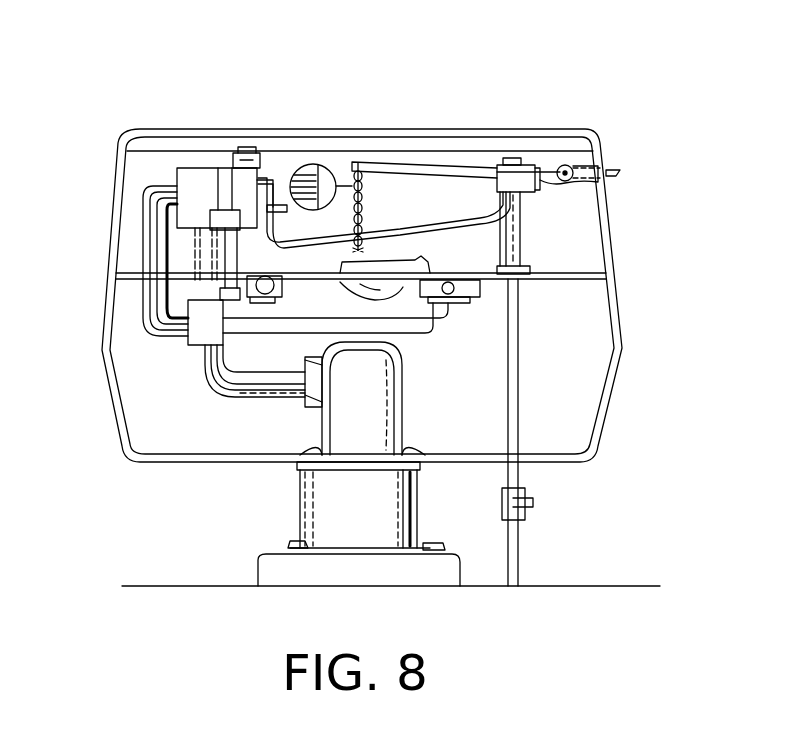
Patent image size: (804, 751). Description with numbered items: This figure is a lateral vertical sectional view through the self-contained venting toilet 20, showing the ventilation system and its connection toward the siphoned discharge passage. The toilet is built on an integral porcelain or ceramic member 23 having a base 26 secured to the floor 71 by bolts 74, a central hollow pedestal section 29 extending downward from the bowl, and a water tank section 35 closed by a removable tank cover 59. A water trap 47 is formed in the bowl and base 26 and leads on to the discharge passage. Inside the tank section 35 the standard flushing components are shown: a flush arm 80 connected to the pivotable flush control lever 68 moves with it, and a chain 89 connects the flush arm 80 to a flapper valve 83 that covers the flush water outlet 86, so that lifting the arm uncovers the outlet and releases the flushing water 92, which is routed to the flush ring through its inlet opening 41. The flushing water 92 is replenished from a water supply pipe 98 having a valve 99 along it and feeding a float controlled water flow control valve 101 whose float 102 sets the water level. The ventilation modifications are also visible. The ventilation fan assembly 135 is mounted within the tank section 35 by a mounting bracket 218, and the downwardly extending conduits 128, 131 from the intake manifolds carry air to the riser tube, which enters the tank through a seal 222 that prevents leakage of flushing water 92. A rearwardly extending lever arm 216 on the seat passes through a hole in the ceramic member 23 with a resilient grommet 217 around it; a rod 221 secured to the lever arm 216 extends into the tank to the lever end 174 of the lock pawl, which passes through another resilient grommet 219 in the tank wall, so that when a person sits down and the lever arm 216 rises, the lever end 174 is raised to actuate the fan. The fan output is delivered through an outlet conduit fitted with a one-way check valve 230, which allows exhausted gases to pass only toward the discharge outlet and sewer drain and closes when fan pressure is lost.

The self-contained venting toilet 20 is at (432, 54).
The integral porcelain or ceramic member 23 is at (632, 346).
The base 26 is at (255, 572).
The central hollow pedestal section 29 is at (300, 497).
The water tank section 35 is at (618, 262).
The inlet opening 41 is at (380, 290).
The water trap 47 is at (402, 411).
The removable tank cover 59 is at (497, 156).
The pivotable flush control lever 68 is at (618, 172).
The floor 71 is at (157, 586).
The bolts 74 is at (292, 547).
The flush arm 80 is at (432, 162).
The flapper valve 83 is at (430, 262).
The flush water outlet 86 is at (352, 300).
The chain 89 is at (366, 208).
The flushing water 92 is at (572, 190).
The water supply pipe 98 is at (520, 548).
The valve 99 is at (528, 500).
The float controlled water flow control valve 101 is at (546, 104).
The float 102 is at (316, 165).
The downwardly extending conduit 128 is at (472, 304).
The downwardly extending conduit 131 is at (273, 264).
The ventilation fan assembly 135 is at (192, 162).
The lever end 174 is at (246, 150).
The lever arm 216 is at (238, 300).
The resilient grommet 217 is at (223, 397).
The mounting bracket 218 is at (228, 240).
The resilient grommet 219 is at (222, 150).
The rod 221 is at (270, 231).
The seal 222 is at (162, 279).
The one-way or check valve 230 is at (185, 355).